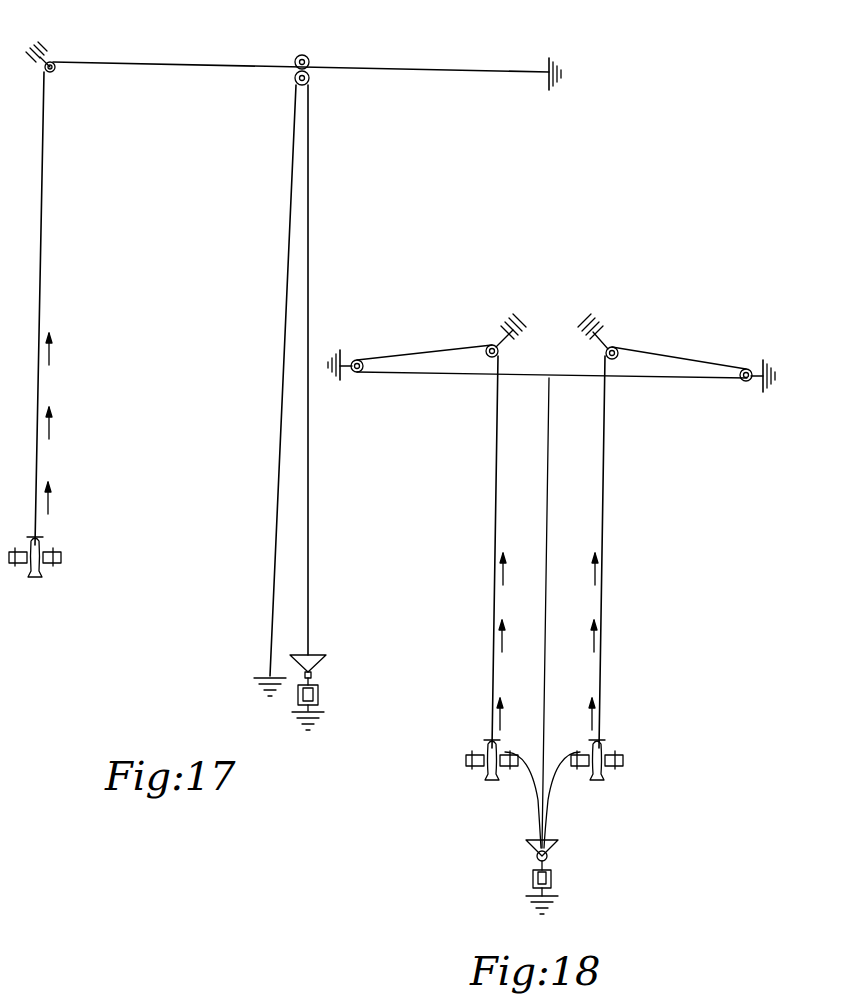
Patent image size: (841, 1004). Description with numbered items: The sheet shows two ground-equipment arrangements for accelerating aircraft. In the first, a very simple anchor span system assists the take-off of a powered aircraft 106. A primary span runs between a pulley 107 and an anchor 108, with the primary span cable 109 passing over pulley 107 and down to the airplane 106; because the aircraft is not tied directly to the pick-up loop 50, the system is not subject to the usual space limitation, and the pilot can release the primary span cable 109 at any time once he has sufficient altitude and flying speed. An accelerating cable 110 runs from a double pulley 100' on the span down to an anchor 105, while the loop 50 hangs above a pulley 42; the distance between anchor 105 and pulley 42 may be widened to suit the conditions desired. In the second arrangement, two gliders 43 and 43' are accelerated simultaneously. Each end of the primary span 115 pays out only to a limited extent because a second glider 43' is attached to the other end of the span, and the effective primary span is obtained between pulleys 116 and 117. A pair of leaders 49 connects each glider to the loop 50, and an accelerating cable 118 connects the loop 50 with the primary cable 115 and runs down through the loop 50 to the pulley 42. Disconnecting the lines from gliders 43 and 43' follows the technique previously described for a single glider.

In FIG. 17, the pulley 107 is at (52, 61).
In FIG. 17, the double pulley 100' is at (301, 58).
In FIG. 17, the anchor 108 is at (548, 66).
In FIG. 17, the primary span cable 109 is at (42, 262).
In FIG. 17, the powered aircraft 106 is at (55, 560).
In FIG. 17, the accelerating cable 110 is at (283, 330).
In FIG. 17, the anchor 105 is at (262, 676).
In FIG. 17, the pick-up loop 50 is at (318, 654).
In FIG. 18, the pick-up loop 50 is at (556, 842).
In FIG. 17, the pulley 42 is at (318, 697).
In FIG. 18, the pulley 42 is at (552, 882).
In FIG. 18, the pulley 116 is at (358, 358).
In FIG. 18, the pulley 117 is at (752, 368).
In FIG. 18, the accelerating cable 118 is at (547, 516).
In FIG. 18, the primary span 115 is at (603, 477).
In FIG. 18, the second glider 43' is at (473, 764).
In FIG. 18, the glider 43 is at (619, 764).
In FIG. 18, the leaders 49 is at (533, 788).